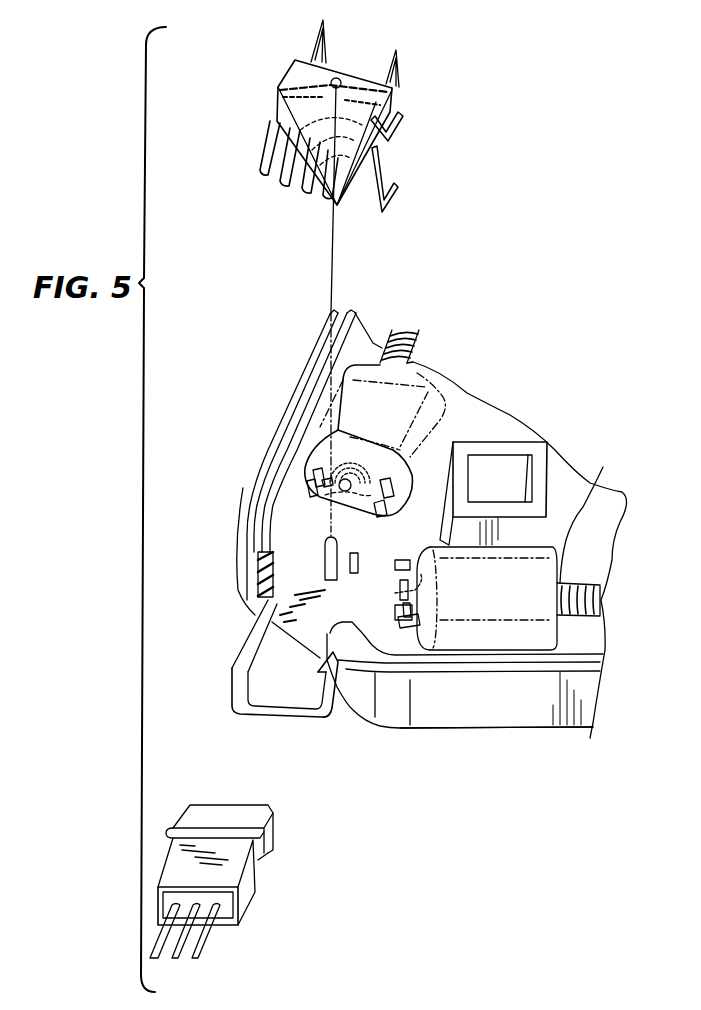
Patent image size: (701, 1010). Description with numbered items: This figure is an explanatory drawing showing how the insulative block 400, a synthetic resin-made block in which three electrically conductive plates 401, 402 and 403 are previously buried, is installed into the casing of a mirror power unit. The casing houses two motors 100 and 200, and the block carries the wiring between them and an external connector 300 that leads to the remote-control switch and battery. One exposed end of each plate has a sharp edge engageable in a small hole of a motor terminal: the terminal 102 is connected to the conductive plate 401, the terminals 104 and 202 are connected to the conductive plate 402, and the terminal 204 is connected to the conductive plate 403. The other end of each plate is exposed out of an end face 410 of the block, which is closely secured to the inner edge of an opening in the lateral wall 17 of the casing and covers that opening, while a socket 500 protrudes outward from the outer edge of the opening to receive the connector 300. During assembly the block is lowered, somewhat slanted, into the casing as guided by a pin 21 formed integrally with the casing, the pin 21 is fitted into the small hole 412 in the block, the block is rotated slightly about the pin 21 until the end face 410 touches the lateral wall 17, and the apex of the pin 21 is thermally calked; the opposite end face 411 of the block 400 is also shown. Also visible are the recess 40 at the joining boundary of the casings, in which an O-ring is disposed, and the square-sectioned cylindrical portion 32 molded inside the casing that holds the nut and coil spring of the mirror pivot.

The insulative block 400 is at (287, 78).
The conductive plate 401 is at (260, 173).
The conductive plate 402 is at (290, 183).
The conductive plate 403 is at (310, 190).
The end face 410 is at (342, 188).
The end face 411 is at (367, 58).
The small hole 412 is at (350, 75).
The motor 100 is at (342, 387).
The terminal 102 is at (305, 492).
The terminal 104 is at (388, 503).
The recess 40 is at (298, 413).
The cylindrical portion 32 is at (470, 447).
The motor 200 is at (603, 480).
The pin 21 is at (257, 578).
The socket 500 is at (240, 647).
The terminal 202 is at (313, 587).
The terminal 204 is at (413, 640).
The lateral wall 17 is at (483, 700).
The connector 300 is at (245, 893).